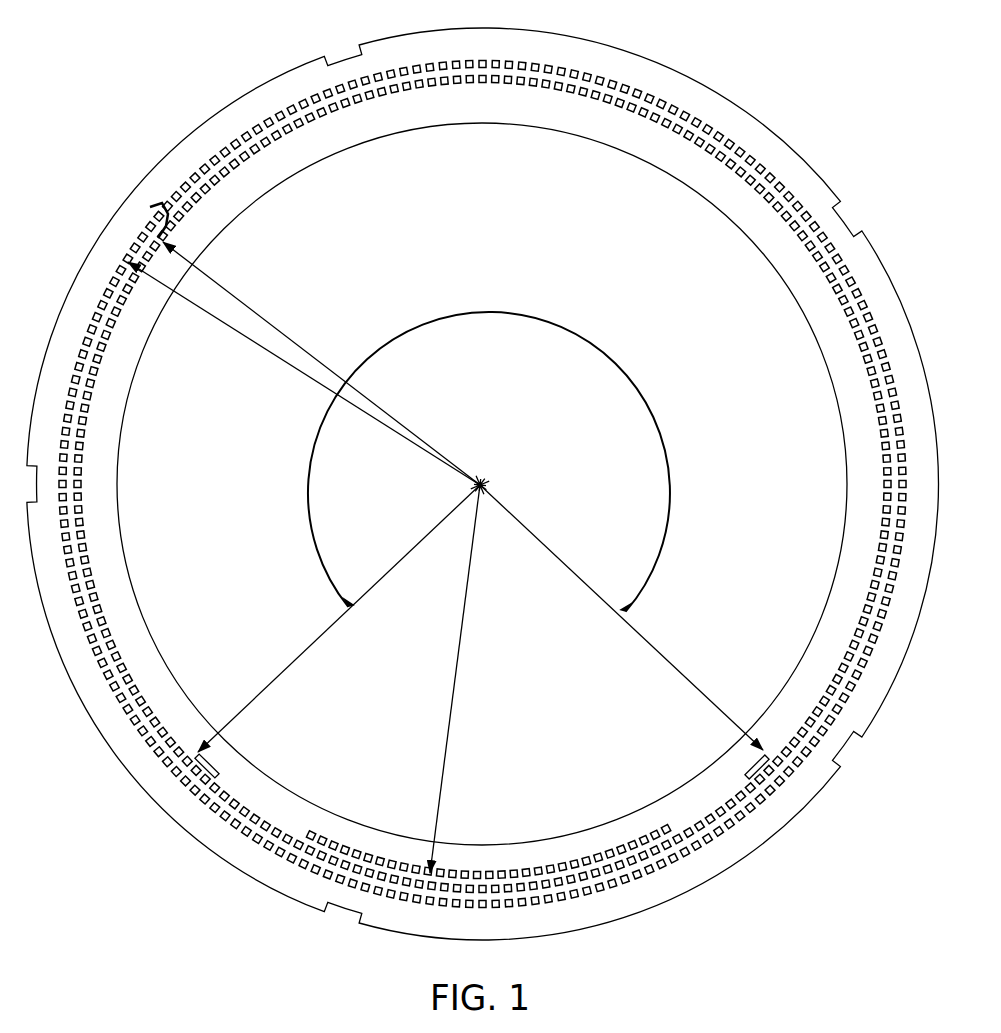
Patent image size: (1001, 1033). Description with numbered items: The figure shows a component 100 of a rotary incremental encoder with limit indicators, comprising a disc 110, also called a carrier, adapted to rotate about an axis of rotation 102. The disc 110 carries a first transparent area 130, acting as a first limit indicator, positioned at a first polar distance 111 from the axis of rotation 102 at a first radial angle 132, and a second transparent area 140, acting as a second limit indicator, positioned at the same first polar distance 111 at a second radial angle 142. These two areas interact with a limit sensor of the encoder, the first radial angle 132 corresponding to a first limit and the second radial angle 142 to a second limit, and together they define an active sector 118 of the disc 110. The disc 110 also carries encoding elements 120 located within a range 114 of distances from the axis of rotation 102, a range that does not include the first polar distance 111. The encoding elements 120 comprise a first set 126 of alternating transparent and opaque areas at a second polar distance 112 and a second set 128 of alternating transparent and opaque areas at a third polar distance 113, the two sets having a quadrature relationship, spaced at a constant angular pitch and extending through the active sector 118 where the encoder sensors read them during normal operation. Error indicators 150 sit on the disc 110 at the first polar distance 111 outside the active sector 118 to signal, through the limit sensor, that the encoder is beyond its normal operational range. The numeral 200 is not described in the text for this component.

The component 100 is at (790, 80).
The axis of rotation 102 is at (480, 485).
The disc 110 is at (501, 117).
The first polar distance 111 is at (459, 655).
The second polar distance 112 is at (290, 340).
The third polar distance 113 is at (257, 344).
The range of distances 114 is at (168, 214).
The active sector 118 is at (547, 321).
The encoding elements 120 is at (482, 484).
The first set of alternating transparent and opaque areas 126 is at (376, 90).
The second set of alternating transparent and opaque areas 128 is at (402, 67).
The first transparent area 130 is at (212, 762).
The first radial angle 132 is at (280, 680).
The second transparent area 140 is at (745, 765).
The second radial angle 142 is at (665, 661).
The error indicators 150 is at (468, 869).
The second embodiment 200 is at (843, 1032).